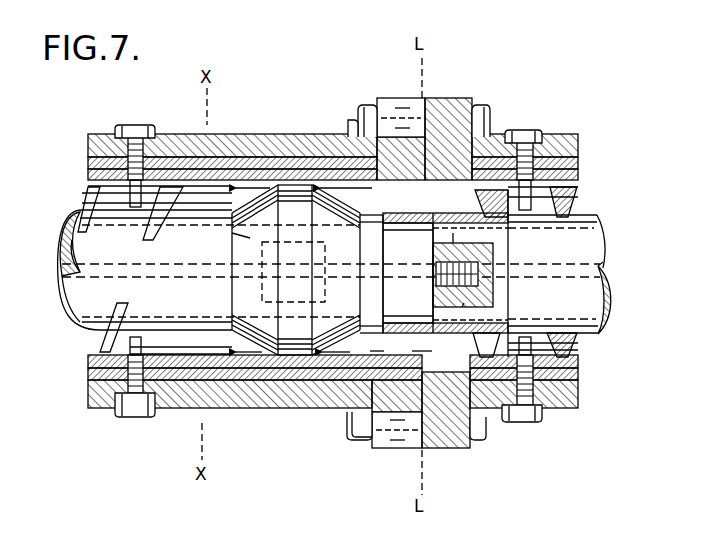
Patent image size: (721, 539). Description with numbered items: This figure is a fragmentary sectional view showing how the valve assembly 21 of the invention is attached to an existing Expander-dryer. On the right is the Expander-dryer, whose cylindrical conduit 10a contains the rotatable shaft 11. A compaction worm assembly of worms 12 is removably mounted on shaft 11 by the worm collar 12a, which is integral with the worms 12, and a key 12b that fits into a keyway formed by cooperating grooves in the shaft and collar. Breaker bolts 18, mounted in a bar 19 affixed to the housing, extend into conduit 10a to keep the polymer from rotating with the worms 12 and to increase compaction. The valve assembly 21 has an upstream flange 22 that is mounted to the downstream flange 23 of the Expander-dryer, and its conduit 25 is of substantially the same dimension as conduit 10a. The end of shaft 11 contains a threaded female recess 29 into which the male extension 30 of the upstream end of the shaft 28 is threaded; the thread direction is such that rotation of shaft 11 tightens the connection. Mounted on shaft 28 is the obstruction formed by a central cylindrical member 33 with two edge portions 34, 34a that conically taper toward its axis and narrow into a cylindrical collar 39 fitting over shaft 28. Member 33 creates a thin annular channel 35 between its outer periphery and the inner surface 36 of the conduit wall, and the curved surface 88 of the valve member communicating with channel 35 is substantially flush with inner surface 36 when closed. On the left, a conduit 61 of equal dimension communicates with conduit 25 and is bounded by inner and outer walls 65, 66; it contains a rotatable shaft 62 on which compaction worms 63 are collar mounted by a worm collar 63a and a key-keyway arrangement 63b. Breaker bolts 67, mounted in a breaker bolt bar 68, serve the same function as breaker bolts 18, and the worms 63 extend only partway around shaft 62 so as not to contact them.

The cylindrical conduit 10a is at (538, 352).
The rotatable shaft 11 is at (453, 233).
The worms 12 is at (563, 201).
The worm collar 12a is at (607, 327).
The key 12b is at (606, 276).
The breaker bolts 18 is at (522, 421).
The bar 19 is at (560, 136).
The valve assembly 21 is at (259, 130).
The upstream flange 22 is at (399, 100).
The downstream flange 23 is at (441, 100).
The conduit 25 is at (356, 192).
The shaft 28 is at (419, 257).
The threaded female recess 29 is at (462, 307).
The male extension 30 is at (437, 286).
The central cylindrical member 33 is at (306, 211).
The edge portion 34 is at (345, 216).
The edge portion 34a is at (248, 237).
The annular channel 35 is at (289, 183).
The inner surface 36 is at (305, 357).
The cylindrical collar 39 is at (401, 351).
The conduit 61 is at (89, 186).
The rotatable shaft 62 is at (62, 262).
The compaction worms 63 is at (93, 342).
The worm collar 63a is at (64, 235).
The key-keyway arrangement 63b is at (66, 283).
The inner wall 65 is at (90, 173).
The outer wall 66 is at (90, 161).
The breaker bolts 67 is at (135, 126).
The breaker bolt bar 68 is at (99, 133).
The surface 88 is at (262, 297).